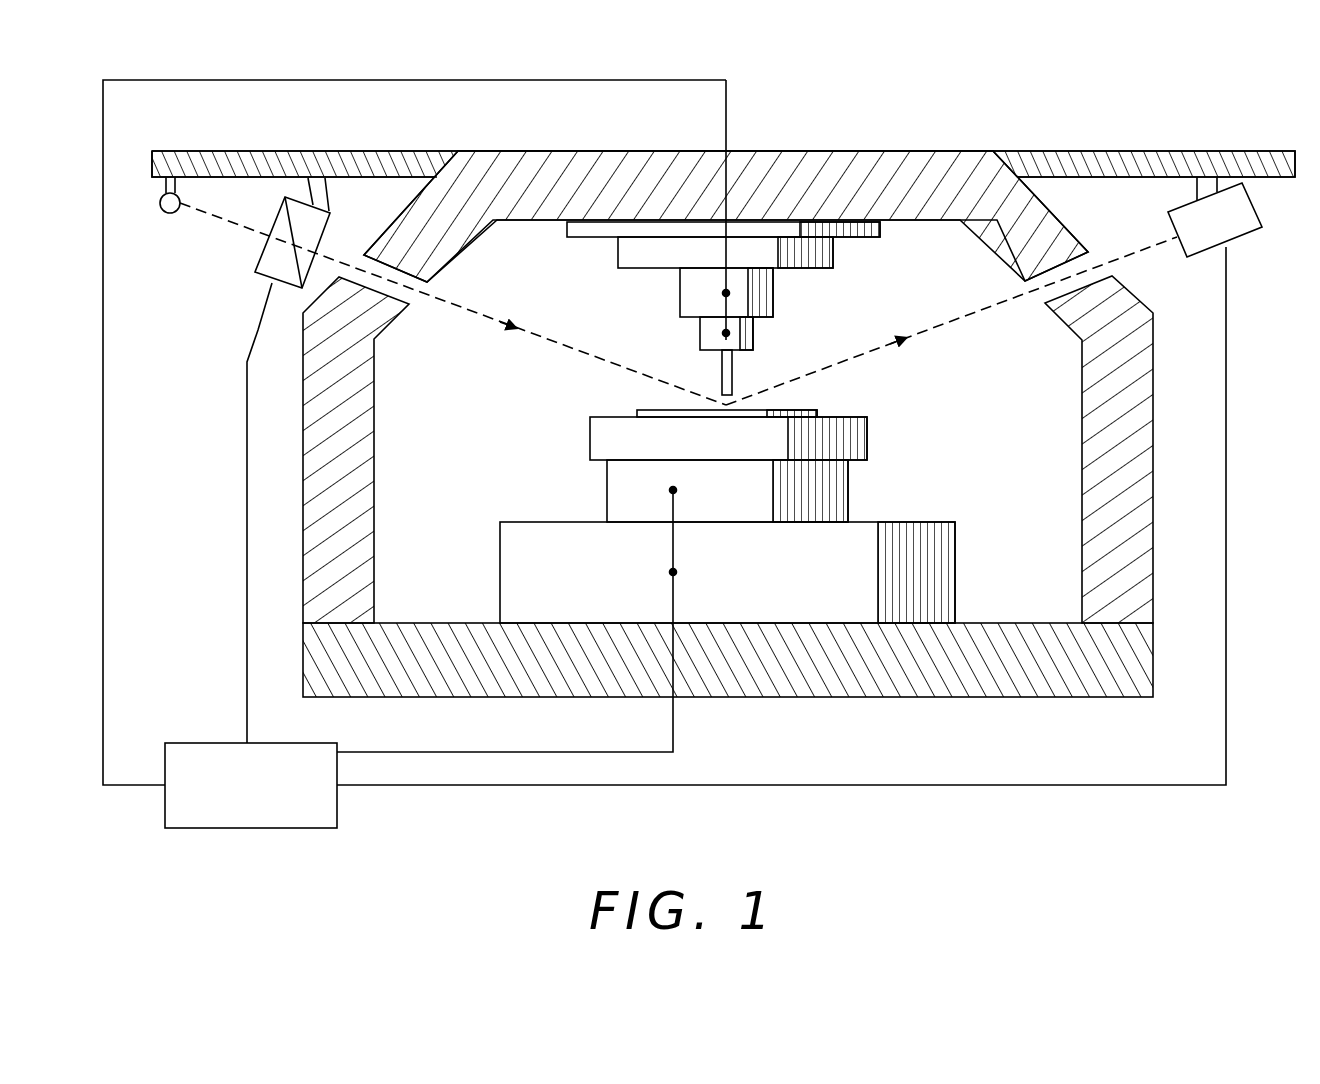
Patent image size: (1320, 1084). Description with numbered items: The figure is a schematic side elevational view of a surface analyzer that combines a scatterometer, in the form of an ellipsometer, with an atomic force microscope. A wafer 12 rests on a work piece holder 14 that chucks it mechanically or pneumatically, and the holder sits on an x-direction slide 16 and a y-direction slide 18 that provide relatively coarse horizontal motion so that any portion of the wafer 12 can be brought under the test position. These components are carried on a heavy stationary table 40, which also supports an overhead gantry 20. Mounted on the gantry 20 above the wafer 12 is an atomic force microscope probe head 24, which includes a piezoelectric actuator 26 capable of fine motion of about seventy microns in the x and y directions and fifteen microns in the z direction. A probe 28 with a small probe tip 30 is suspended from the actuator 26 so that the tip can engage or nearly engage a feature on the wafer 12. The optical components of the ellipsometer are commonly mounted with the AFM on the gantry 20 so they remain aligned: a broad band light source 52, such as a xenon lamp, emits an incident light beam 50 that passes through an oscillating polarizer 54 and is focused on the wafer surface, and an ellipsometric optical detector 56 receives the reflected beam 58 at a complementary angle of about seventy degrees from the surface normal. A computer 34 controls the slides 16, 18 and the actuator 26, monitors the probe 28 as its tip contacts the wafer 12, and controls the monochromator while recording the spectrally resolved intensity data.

The wafer 12 is at (637, 410).
The work piece holder 14 is at (590, 440).
The x-direction slide 16 is at (607, 490).
The y-direction slide 18 is at (500, 575).
The overhead gantry 20 is at (850, 165).
The atomic force microscope probe head 24 is at (655, 293).
The piezoelectric actuator 26 is at (775, 307).
The probe 28 is at (757, 334).
The probe tip 30 is at (734, 370).
The computer 34 is at (203, 743).
The stationary table 40 is at (980, 675).
The incident light beam 50 is at (217, 216).
The broad band light source 52 is at (168, 214).
The oscillating polarizer 54 is at (312, 222).
The ellipsometric optical detector 56 is at (1248, 230).
The reflected beam 58 is at (983, 310).